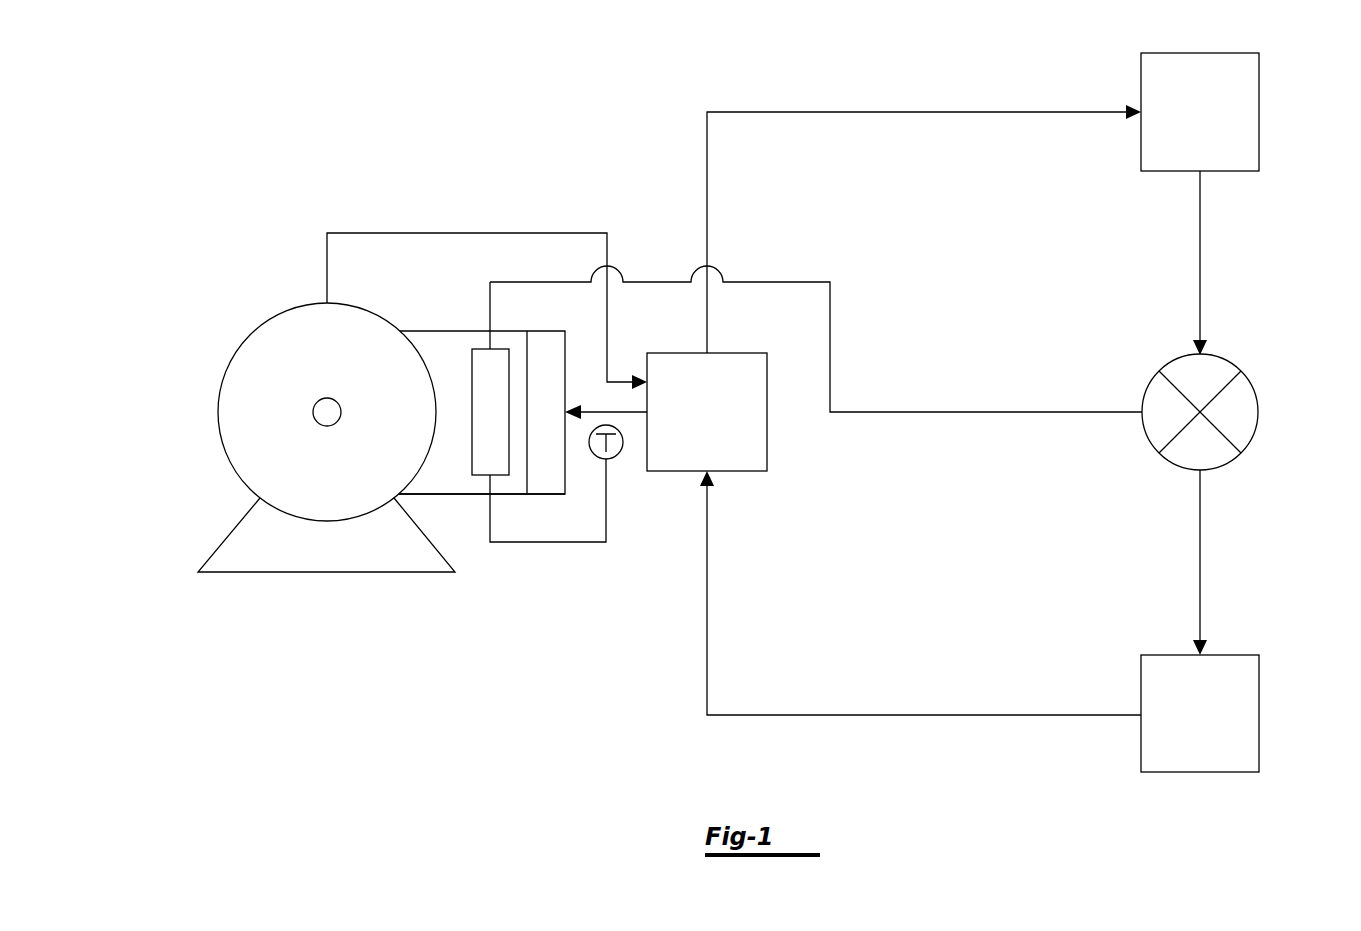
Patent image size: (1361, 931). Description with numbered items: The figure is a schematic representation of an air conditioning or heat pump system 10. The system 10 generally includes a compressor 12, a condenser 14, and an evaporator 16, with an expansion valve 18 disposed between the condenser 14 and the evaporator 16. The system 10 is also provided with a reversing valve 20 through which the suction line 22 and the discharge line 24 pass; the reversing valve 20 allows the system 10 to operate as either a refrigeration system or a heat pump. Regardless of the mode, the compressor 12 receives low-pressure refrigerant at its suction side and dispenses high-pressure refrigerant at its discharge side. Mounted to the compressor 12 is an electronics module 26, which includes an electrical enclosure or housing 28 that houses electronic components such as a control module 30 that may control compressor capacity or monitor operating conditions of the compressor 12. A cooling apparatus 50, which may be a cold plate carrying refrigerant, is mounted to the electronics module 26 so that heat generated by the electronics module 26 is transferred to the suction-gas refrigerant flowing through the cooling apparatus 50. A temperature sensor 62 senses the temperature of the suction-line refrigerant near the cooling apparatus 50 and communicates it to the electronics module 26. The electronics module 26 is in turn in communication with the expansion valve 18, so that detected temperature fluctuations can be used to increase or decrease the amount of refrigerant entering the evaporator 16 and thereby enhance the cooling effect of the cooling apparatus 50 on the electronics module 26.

The air conditioning or heat pump system 10 is at (512, 112).
The compressor 12 is at (338, 482).
The condenser 14 is at (1211, 125).
The evaporator 16 is at (1211, 728).
The expansion valve 18 is at (1258, 412).
The reversing valve 20 is at (718, 424).
The suction line 22 is at (592, 408).
The discharge line 24 is at (400, 233).
The electronics module 26 is at (425, 318).
The electrical enclosure or housing 28 is at (467, 496).
The control module 30 is at (501, 421).
The cooling apparatus 50 is at (547, 478).
The temperature sensor 62 is at (618, 455).